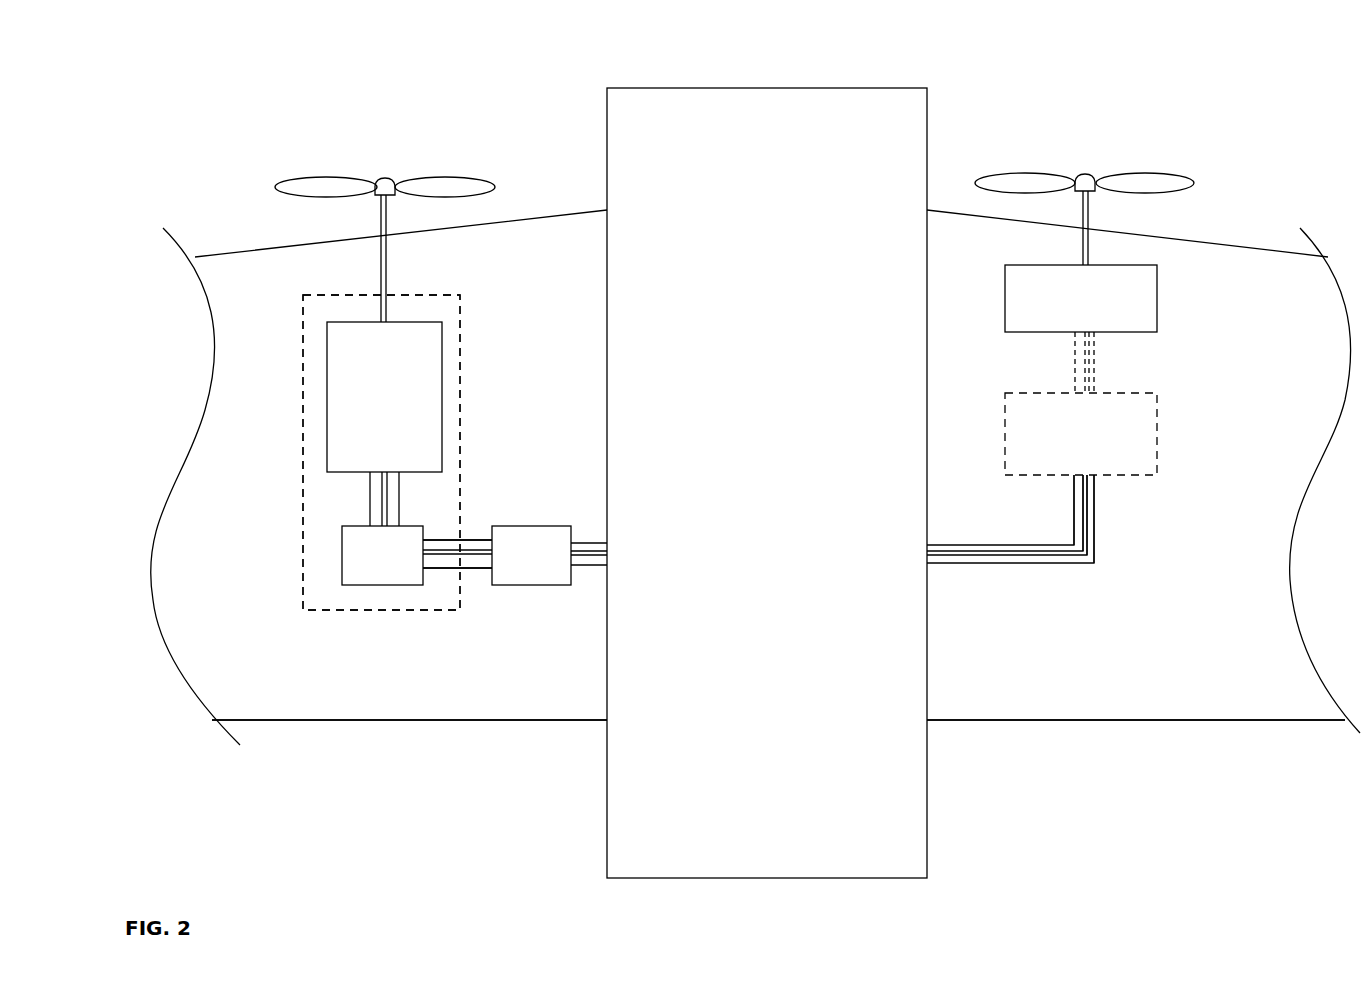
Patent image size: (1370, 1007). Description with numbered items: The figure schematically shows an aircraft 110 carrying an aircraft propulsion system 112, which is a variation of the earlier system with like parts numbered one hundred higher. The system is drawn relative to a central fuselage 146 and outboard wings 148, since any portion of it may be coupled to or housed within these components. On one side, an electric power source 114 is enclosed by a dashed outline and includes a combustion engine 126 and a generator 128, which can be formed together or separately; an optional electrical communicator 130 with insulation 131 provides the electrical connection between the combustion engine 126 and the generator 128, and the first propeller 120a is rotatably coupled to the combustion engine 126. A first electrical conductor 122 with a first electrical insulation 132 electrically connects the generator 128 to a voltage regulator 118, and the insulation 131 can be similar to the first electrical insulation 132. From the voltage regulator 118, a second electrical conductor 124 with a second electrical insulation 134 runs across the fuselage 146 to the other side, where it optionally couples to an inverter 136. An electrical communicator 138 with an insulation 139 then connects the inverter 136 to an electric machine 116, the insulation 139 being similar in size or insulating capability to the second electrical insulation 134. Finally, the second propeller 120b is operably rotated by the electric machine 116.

The aircraft 110 is at (1085, 44).
The aircraft propulsion system 112 is at (415, 632).
The electric power source 114 is at (458, 310).
The electric machine 116 is at (1157, 299).
The voltage regulator 118 is at (535, 587).
The first propeller 120a is at (443, 175).
The second propeller 120b is at (1140, 172).
The first electrical conductor 122 is at (450, 553).
The second electrical conductor 124 is at (998, 557).
The combustion engine 126 is at (442, 377).
The generator 128 is at (367, 587).
The electrical communicator 130 is at (387, 502).
The insulation 131 is at (368, 500).
The first electrical insulation 132 is at (468, 570).
The second electrical insulation 134 is at (1095, 497).
The inverter 136 is at (1158, 430).
The electrical communicator 138 is at (1100, 365).
The insulation 139 is at (1072, 363).
The fuselage 146 is at (927, 800).
The wings 148 is at (453, 722).